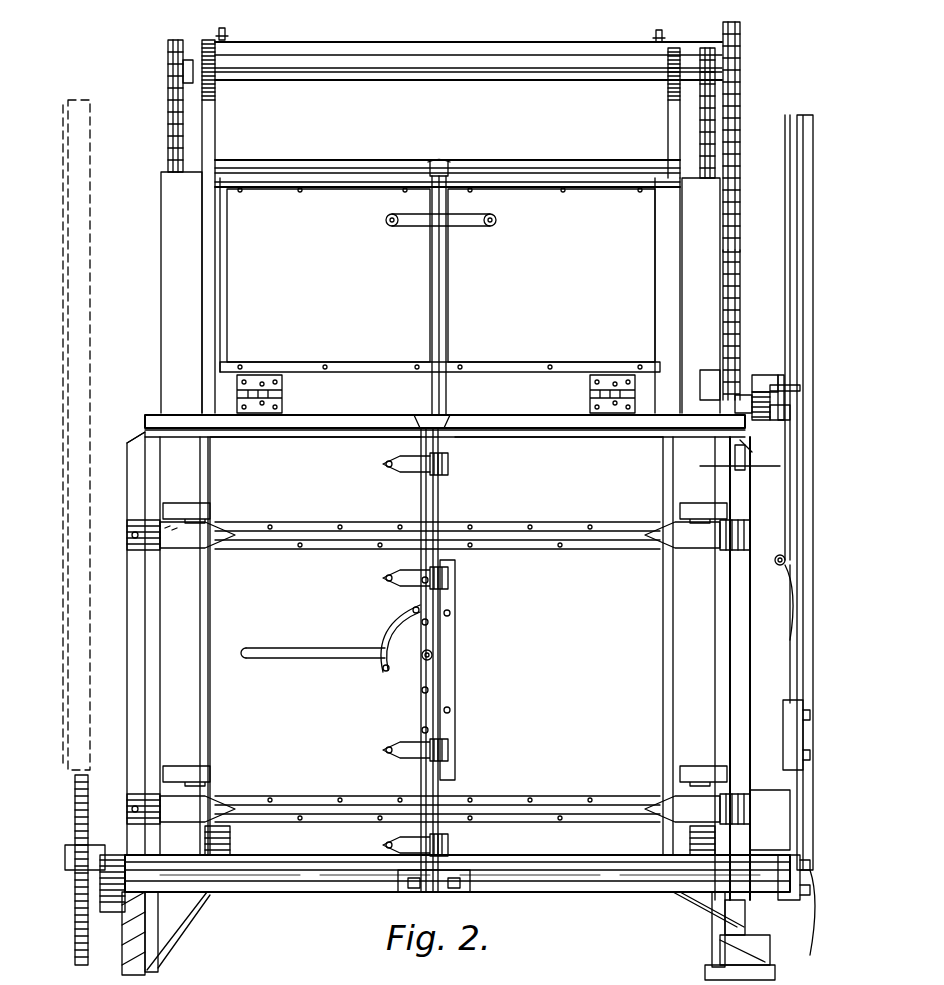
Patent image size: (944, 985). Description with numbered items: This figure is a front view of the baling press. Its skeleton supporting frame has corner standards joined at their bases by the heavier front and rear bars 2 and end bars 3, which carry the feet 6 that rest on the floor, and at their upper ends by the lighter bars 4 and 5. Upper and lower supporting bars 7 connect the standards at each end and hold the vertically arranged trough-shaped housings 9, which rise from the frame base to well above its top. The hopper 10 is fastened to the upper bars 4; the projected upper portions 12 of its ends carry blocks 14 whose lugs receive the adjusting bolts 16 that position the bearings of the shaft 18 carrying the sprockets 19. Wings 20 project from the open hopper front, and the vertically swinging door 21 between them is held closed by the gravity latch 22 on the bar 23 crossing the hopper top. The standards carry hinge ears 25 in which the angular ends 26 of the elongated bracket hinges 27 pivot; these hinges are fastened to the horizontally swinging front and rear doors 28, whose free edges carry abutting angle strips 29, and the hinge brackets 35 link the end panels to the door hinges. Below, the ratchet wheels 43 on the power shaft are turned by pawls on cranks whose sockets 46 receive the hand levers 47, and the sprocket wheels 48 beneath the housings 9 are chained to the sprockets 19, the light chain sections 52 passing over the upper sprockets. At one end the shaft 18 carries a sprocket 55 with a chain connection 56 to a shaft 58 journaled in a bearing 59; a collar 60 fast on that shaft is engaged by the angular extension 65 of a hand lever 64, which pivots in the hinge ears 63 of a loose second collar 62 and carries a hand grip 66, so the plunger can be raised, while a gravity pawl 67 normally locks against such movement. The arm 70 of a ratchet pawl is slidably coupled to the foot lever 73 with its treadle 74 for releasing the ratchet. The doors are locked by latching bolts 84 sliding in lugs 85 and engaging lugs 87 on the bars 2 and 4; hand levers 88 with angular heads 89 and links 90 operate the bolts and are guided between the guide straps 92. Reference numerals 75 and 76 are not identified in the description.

The front and rear base bars 2 is at (378, 885).
The end base bars 3 is at (118, 900).
The upper front and rear bars 4 is at (530, 438).
The upper end bars 5 is at (135, 448).
The feet 6 is at (185, 950).
The supporting bars 7 is at (135, 645).
The trough-shaped housings 9 is at (440, 536).
The hopper 10 is at (441, 256).
The projected upper portions of the hopper ends 12 is at (207, 42).
The blocks 14 is at (666, 100).
The adjusting bolts 16 is at (228, 36).
The shaft 18 is at (437, 80).
The sprockets 19 is at (183, 62).
The wings 20 is at (210, 302).
The vertically swinging door 21 is at (441, 295).
The gravity latch 22 is at (446, 154).
The bar 23 is at (563, 172).
The hinge ears 25 is at (150, 550).
The angular ends of bracket hinges 26 is at (215, 548).
The bracket hinges 27 is at (320, 533).
The front and rear doors 28 is at (436, 646).
The angle strips 29 is at (420, 783).
The hinge brackets 35 is at (180, 505).
The ratchet wheels 43 is at (80, 940).
The sockets 46 is at (790, 728).
The hand levers 47 is at (798, 620).
The sprocket wheels 48 is at (240, 840).
The light chain sections 52 is at (172, 137).
The sprocket 55 is at (733, 72).
The chain connection 56 is at (733, 218).
The shaft 58 is at (735, 404).
The bearing 59 is at (745, 400).
The collar 60 is at (770, 373).
The second collar 62 is at (800, 388).
The hinge ears 63 is at (777, 418).
The hand lever 64 is at (710, 468).
The angular extension 65 is at (782, 345).
The hand grip 66 is at (775, 629).
The gravity pawl 67 is at (712, 372).
The arm 70 is at (708, 970).
The foot lever 73 is at (720, 955).
The treadle 74 is at (726, 935).
The housing 75 is at (792, 820).
The bolt / block 76 is at (655, 36).
The latching bolts 84 is at (440, 512).
The lugs 85 is at (420, 475).
The lugs 87 is at (420, 412).
The hand levers 88 is at (290, 652).
The angular heads 89 is at (432, 648).
The links 90 is at (452, 600).
The guide straps 92 is at (397, 618).